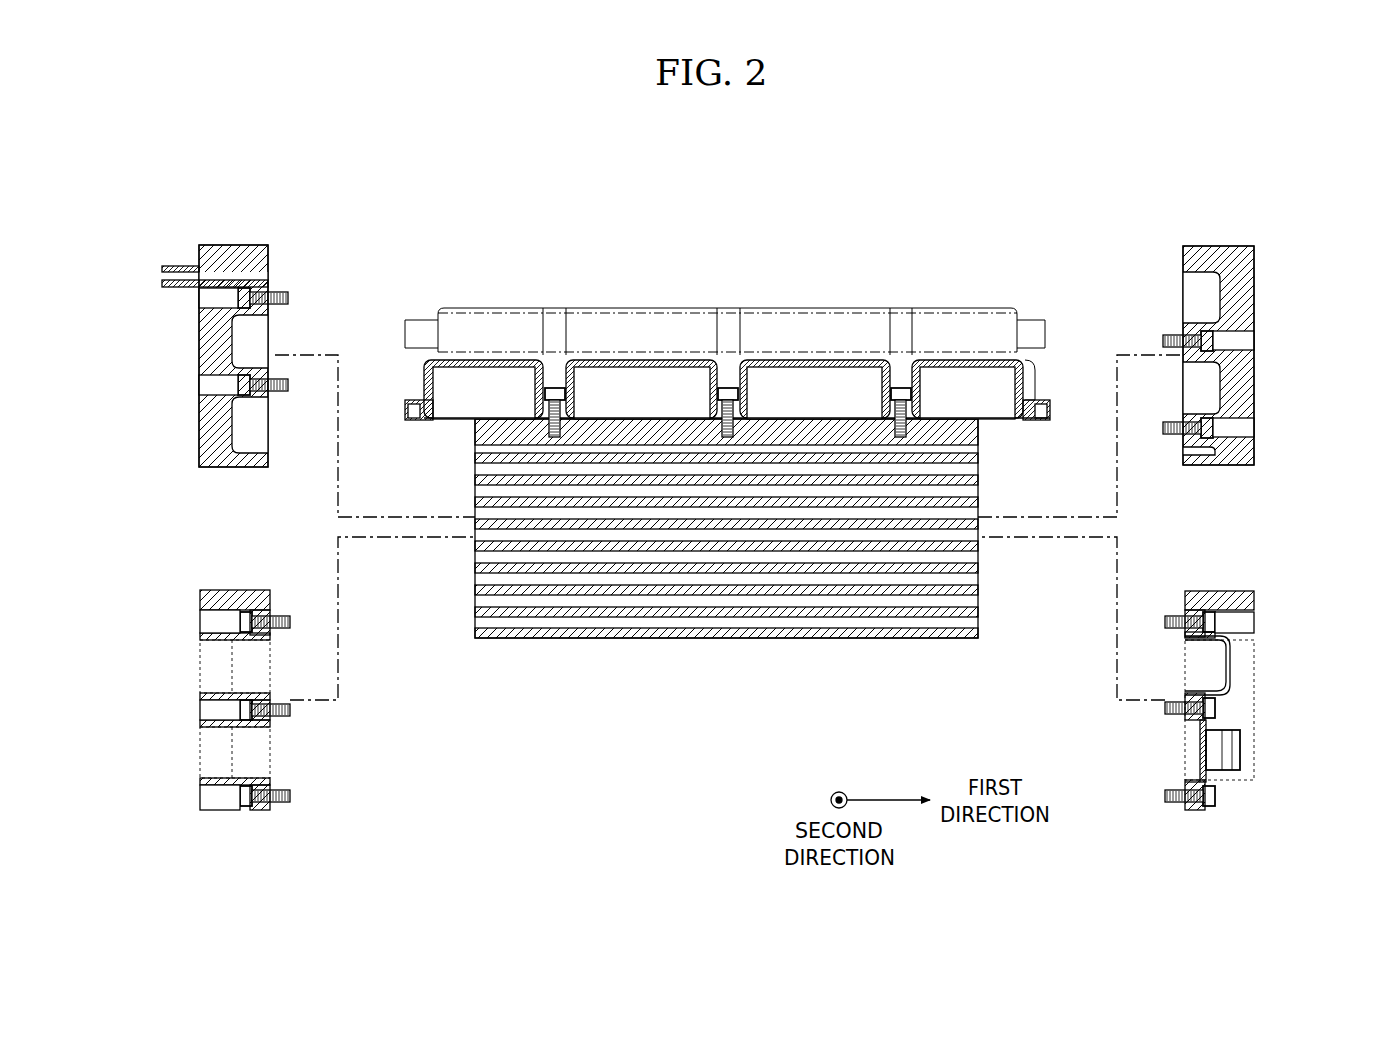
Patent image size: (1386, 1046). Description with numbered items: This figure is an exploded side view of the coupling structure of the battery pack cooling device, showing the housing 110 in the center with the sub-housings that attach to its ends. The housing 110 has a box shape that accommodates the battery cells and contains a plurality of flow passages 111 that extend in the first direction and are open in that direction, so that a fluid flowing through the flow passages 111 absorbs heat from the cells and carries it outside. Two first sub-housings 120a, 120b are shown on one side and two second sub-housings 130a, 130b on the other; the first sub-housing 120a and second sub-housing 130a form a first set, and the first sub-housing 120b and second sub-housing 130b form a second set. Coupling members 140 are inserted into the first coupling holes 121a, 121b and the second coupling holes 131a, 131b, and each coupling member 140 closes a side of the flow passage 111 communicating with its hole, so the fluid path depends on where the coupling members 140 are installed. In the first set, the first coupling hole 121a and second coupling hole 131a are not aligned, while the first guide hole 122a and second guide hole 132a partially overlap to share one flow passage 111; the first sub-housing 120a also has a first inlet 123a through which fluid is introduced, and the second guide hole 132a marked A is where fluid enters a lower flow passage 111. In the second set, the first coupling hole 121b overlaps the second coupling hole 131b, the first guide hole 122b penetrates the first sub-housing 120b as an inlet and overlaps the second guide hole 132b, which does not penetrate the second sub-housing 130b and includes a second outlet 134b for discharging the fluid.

The housing 110 is at (726, 588).
The flow passage 111 is at (750, 600).
The first sub-housing 120a is at (189, 317).
The first sub-housing 120b is at (190, 659).
The first coupling hole 121a is at (222, 296).
The first coupling hole 121b is at (228, 621).
The first guide hole 122a is at (248, 340).
The first guide hole 122b is at (230, 664).
The first inlet 123a is at (172, 268).
The second sub-housing 130a is at (1272, 351).
The second sub-housing 130b is at (1223, 697).
The second coupling hole 131a is at (1233, 341).
The second coupling hole 131b is at (1222, 622).
The second guide hole 132a is at (1205, 292).
The second guide hole 132b is at (1205, 665).
The second outlet 134b is at (1222, 748).
The coupling member 140 is at (275, 292).
The second guide hole (reference A) A is at (1206, 456).